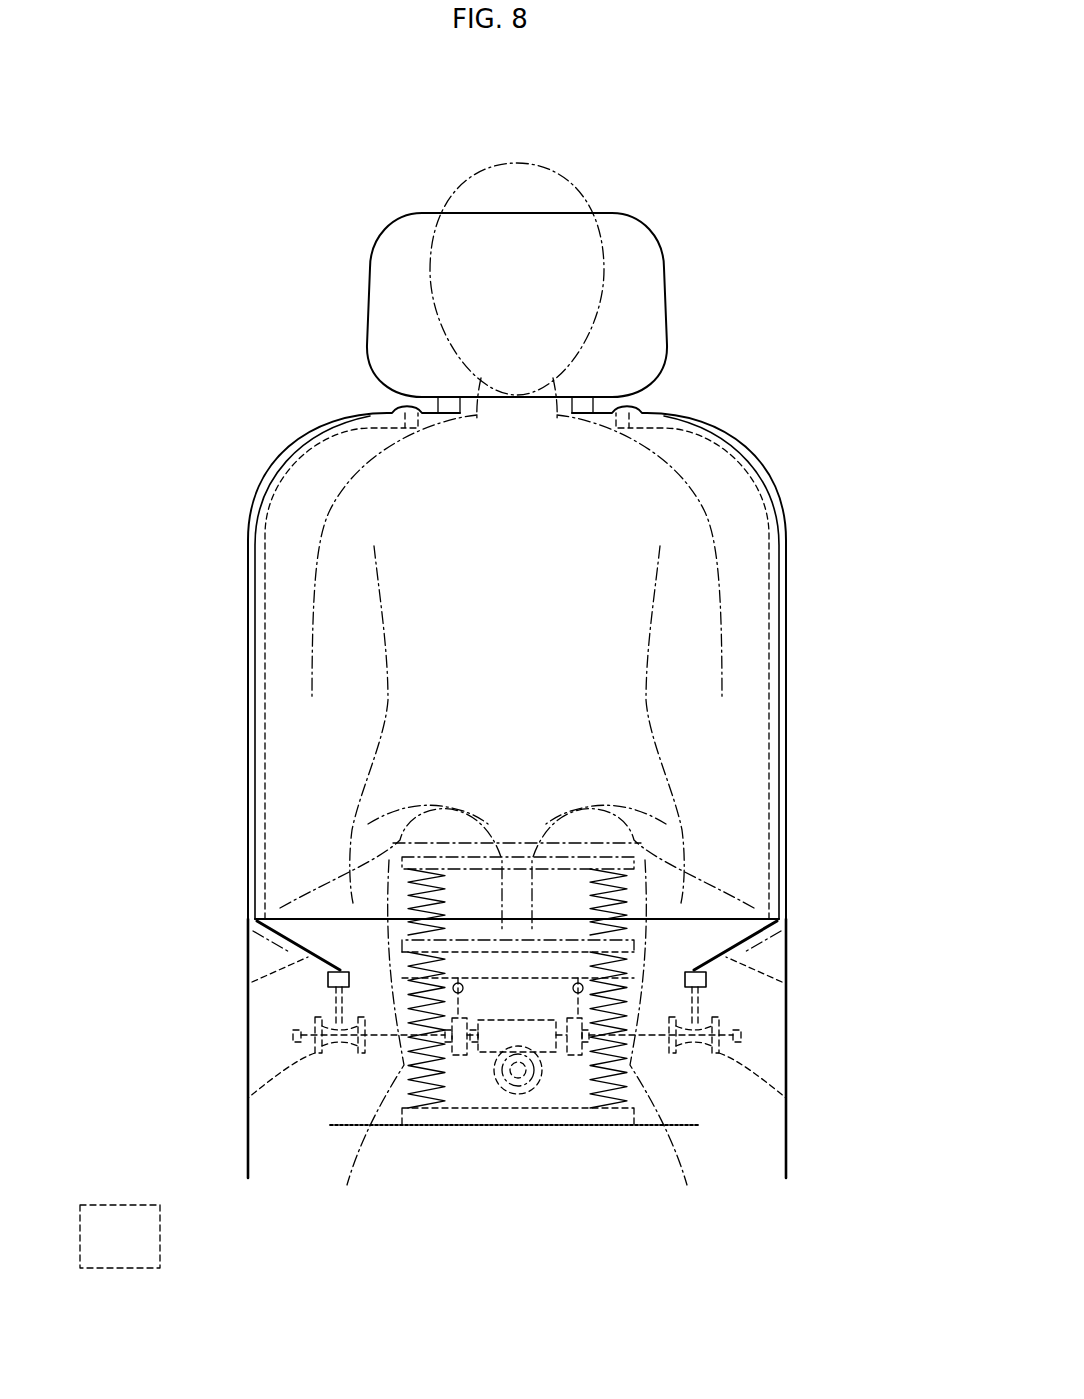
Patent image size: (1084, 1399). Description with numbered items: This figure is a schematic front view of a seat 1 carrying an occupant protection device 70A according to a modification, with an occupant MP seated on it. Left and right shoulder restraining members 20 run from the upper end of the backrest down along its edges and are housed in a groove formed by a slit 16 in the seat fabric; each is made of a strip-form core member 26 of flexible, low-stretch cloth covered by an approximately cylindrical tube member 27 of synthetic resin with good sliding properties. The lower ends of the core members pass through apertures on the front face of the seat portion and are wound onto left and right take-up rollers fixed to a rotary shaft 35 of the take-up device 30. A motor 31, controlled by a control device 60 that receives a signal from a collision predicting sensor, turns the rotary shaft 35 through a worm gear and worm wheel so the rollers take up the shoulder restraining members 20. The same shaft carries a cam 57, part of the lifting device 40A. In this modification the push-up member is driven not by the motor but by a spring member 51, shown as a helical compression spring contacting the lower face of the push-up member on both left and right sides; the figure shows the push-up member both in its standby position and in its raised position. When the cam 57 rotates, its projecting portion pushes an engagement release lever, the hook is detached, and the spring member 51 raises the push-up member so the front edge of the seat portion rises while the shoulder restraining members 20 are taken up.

The seat 1 is at (700, 376).
The occupant MP is at (594, 162).
The slit 16 is at (784, 775).
The shoulder restraining member 20 is at (122, 885).
The tube member 27 is at (290, 952).
The core member 26 is at (252, 982).
The rotary shaft 35 is at (403, 1040).
The spring member 51 is at (410, 1068).
The cam 57 is at (455, 1057).
The take-up device 30 is at (492, 1098).
The motor 31 is at (526, 1088).
The lifting device 40A is at (395, 1066).
The occupant protection device 70A is at (731, 1142).
The control device 60 is at (130, 1240).